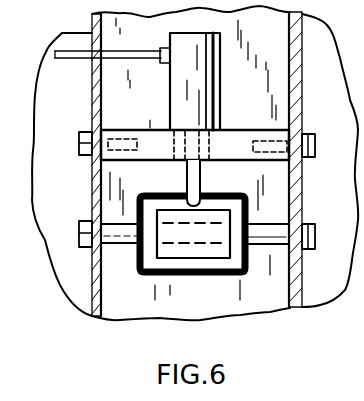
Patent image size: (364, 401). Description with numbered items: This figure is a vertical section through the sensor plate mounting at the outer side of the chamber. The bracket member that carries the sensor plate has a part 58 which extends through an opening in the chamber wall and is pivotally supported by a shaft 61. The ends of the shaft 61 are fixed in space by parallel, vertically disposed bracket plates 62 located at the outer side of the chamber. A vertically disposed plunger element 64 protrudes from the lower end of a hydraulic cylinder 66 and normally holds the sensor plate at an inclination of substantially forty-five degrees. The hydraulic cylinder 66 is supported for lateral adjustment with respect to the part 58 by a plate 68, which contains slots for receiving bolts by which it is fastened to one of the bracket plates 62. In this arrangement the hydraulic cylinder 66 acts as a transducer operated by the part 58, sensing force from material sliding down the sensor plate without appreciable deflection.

The part of bracket member 58 is at (210, 253).
The shaft 61 is at (130, 246).
The bracket plates 62 is at (91, 203).
The plunger element 64 is at (200, 180).
The hydraulic cylinder 66 is at (207, 87).
The plate 68 is at (157, 130).